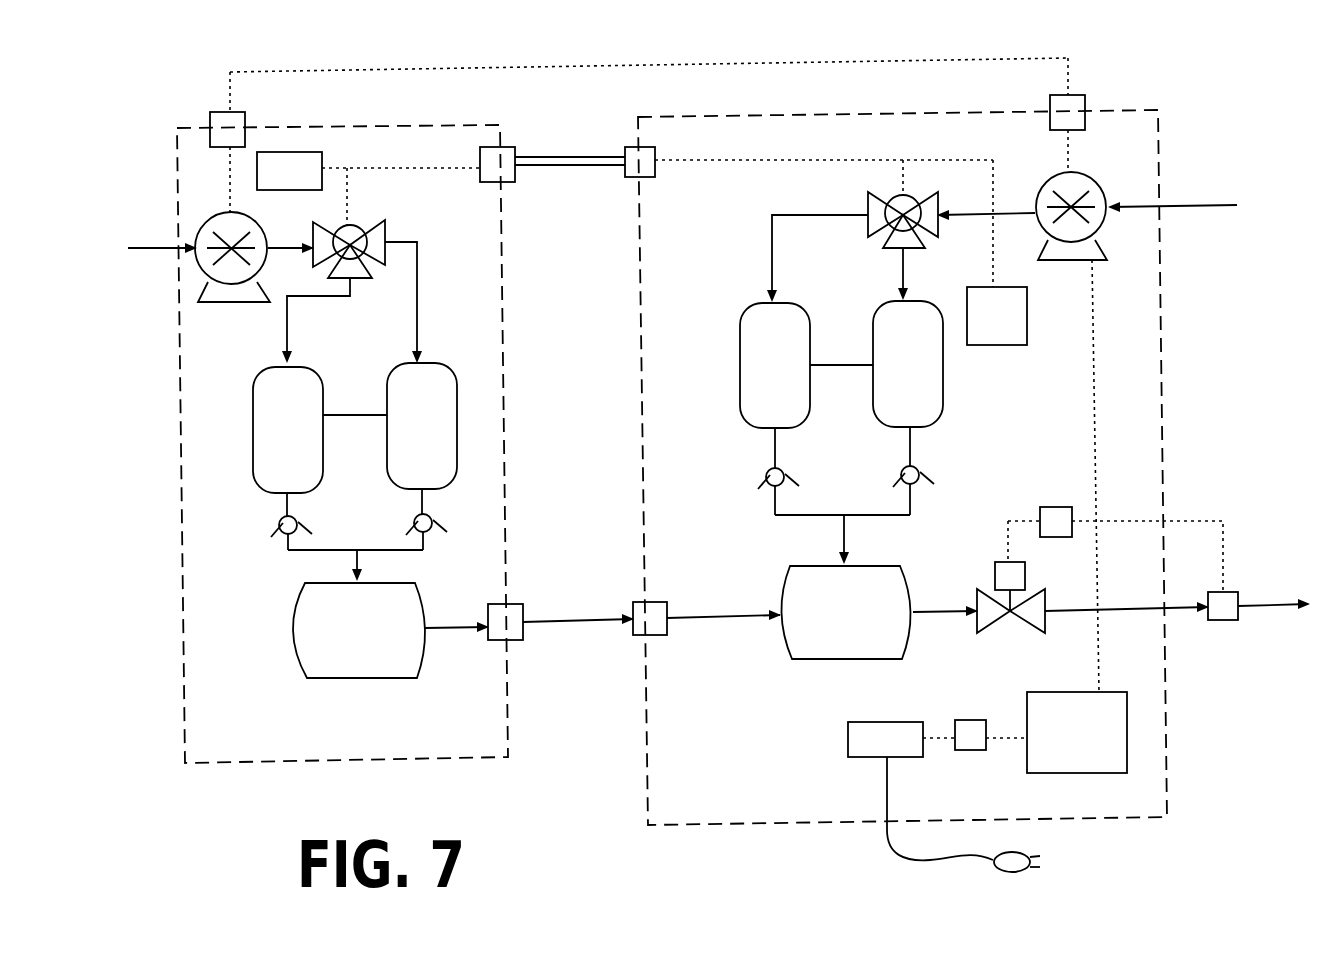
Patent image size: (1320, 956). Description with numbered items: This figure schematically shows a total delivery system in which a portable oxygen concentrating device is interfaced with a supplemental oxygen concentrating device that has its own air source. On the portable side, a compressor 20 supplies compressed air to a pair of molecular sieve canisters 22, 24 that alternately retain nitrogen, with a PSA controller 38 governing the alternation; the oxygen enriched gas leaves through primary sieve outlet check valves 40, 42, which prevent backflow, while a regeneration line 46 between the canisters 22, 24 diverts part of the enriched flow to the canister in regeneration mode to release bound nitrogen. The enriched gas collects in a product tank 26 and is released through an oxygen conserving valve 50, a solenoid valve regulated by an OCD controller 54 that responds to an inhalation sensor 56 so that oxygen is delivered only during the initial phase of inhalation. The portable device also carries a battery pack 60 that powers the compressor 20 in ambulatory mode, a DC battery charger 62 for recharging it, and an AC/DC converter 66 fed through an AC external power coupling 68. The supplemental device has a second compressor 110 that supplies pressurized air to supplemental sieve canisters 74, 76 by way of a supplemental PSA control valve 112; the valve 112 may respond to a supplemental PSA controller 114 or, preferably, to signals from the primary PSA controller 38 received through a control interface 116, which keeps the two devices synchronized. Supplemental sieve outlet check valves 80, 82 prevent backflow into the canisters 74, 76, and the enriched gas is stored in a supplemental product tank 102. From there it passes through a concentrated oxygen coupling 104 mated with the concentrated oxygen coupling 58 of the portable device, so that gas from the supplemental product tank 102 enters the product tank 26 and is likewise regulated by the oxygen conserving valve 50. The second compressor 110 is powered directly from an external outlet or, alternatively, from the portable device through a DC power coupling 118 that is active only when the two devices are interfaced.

The compressor 20 is at (1088, 173).
The first primary sieve canister 22 is at (775, 385).
The second primary sieve canister 24 is at (908, 383).
The product tank 26 is at (879, 612).
The PSA controller 38 is at (997, 316).
The primary sieve outlet check valve 40 is at (758, 468).
The primary sieve outlet check valve 42 is at (925, 467).
The regeneration line 46 is at (844, 363).
The oxygen conserving valve 50 is at (995, 573).
The OCD controller 54 is at (1059, 507).
The inhalation sensor 56 is at (1240, 593).
The concentrated oxygen coupling 58 is at (667, 608).
The battery pack 60 is at (1056, 516).
The DC battery charger 62 is at (970, 720).
The AC/DC converter 66 is at (900, 720).
The AC external power coupling 68 is at (1003, 877).
The first supplemental sieve canister 74 is at (288, 441).
The second supplemental sieve canister 76 is at (390, 438).
The supplemental sieve outlet check valve 80 is at (273, 517).
The supplemental sieve outlet check valve 82 is at (433, 517).
The supplemental product tank 102 is at (388, 614).
The concentrated oxygen coupling 104 is at (525, 614).
The second compressor 110 is at (238, 302).
The supplemental PSA control valve 112 is at (367, 268).
The supplemental PSA controller 114 is at (368, 188).
The control interface 116 is at (563, 155).
The DC power coupling 118 is at (827, 57).